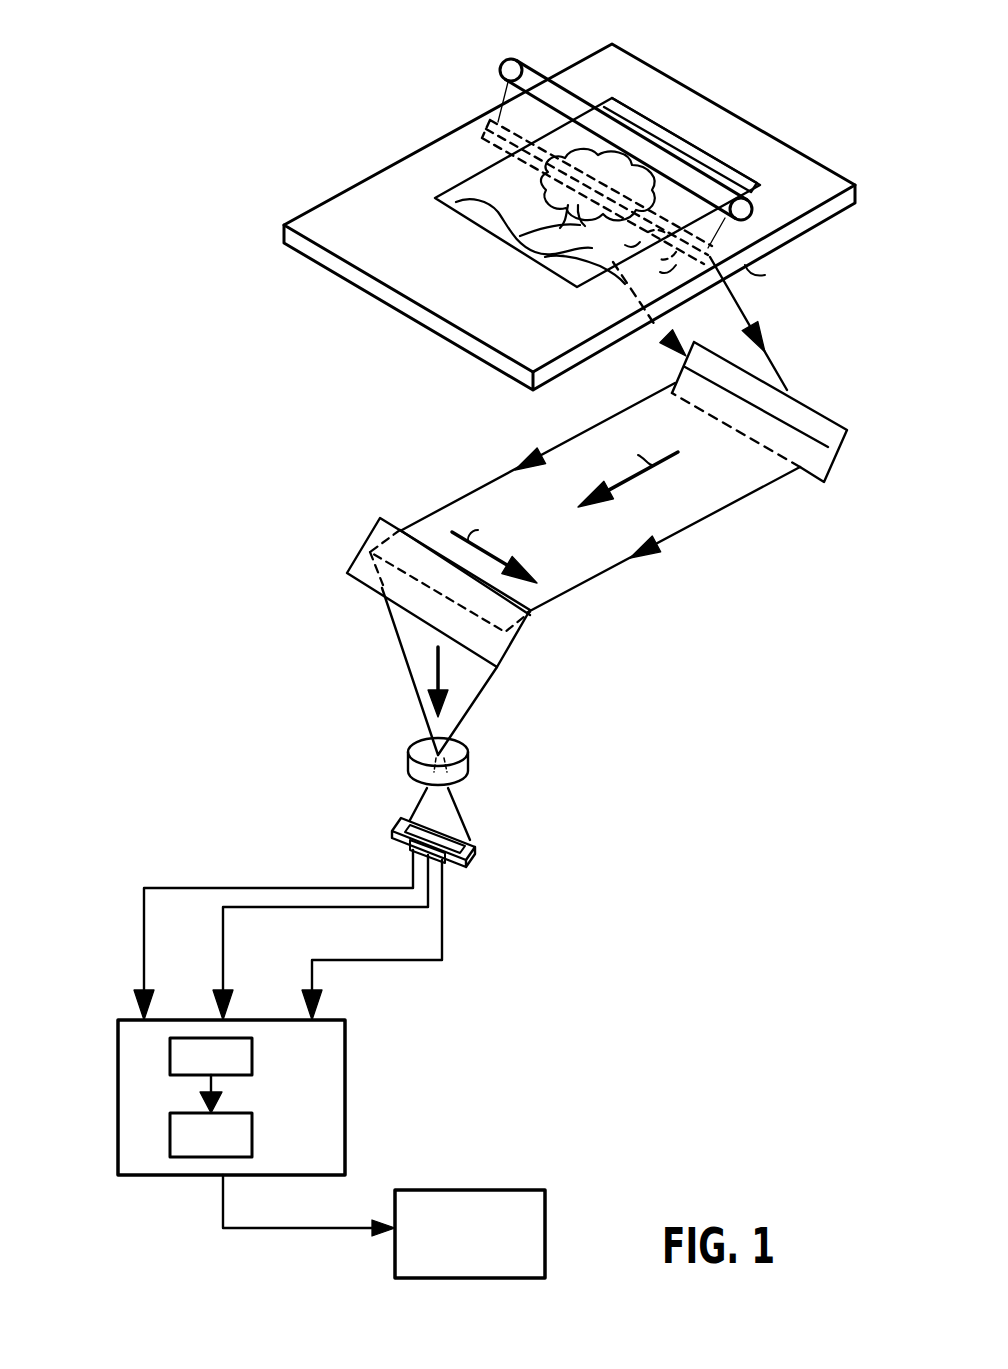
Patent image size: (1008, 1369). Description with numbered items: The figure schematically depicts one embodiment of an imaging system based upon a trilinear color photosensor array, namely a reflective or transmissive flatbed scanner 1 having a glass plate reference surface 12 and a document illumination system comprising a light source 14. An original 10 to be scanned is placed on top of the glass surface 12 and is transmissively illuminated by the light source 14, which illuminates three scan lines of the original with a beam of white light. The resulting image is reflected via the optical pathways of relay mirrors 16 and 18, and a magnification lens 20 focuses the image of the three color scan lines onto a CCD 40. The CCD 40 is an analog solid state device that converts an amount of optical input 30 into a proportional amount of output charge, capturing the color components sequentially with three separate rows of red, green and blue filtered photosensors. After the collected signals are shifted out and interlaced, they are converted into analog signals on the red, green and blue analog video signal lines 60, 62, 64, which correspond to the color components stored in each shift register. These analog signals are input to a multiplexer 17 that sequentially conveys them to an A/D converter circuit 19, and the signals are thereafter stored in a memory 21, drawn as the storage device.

The flatbed scanner 1 is at (846, 105).
The original 10 is at (527, 240).
The glass plate reference surface 12 is at (347, 190).
The light source 14 is at (515, 62).
The relay mirror 16 is at (830, 418).
The multiplexer 17 is at (254, 1055).
The relay mirror 18 is at (349, 576).
The A/D converter circuit 19 is at (254, 1133).
The magnification lens 20 is at (408, 760).
The memory 21 is at (458, 1190).
The optical input 30 is at (770, 350).
The CCD 40 is at (400, 822).
The red video signal line 60 is at (144, 915).
The green video signal line 62 is at (223, 927).
The blue video signal line 64 is at (312, 958).